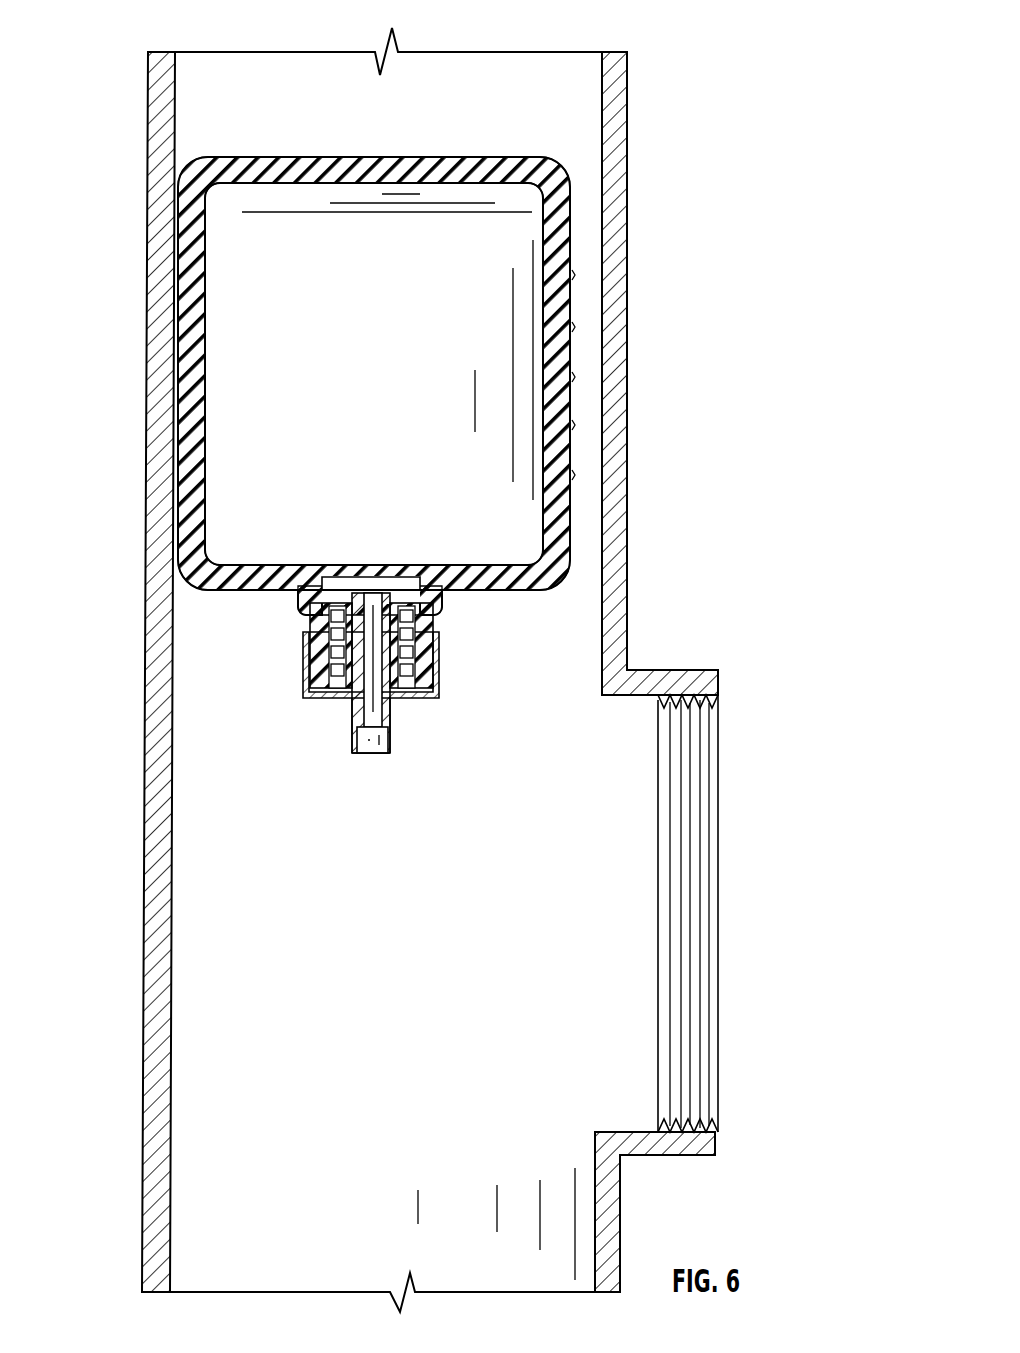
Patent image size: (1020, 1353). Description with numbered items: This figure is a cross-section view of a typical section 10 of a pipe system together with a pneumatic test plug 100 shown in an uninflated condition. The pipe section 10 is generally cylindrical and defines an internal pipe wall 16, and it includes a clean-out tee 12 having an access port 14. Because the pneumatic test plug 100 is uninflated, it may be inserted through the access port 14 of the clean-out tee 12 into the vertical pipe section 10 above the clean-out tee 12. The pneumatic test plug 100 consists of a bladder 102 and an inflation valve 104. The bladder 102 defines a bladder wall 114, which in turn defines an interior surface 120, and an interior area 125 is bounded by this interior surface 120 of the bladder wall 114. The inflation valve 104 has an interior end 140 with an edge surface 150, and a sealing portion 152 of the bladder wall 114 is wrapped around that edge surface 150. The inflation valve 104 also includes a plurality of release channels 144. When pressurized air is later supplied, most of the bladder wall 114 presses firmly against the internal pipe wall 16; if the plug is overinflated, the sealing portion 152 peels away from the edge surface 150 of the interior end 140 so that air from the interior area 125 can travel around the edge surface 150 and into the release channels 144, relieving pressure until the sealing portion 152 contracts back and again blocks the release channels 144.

The pipe section 10 is at (698, 115).
The clean-out tee 12 is at (668, 645).
The access port 14 is at (738, 775).
The internal pipe wall 16 is at (175, 108).
The pneumatic test plug 100 is at (462, 88).
The bladder 102 is at (590, 233).
The inflation valve 104 is at (336, 733).
The bladder wall 114 is at (192, 490).
The interior surface 120 is at (206, 446).
The interior area 125 is at (242, 297).
The interior end 140 is at (340, 597).
The release channels 144 is at (403, 680).
The edge surface 150 is at (460, 578).
The sealing portion 152 is at (307, 612).